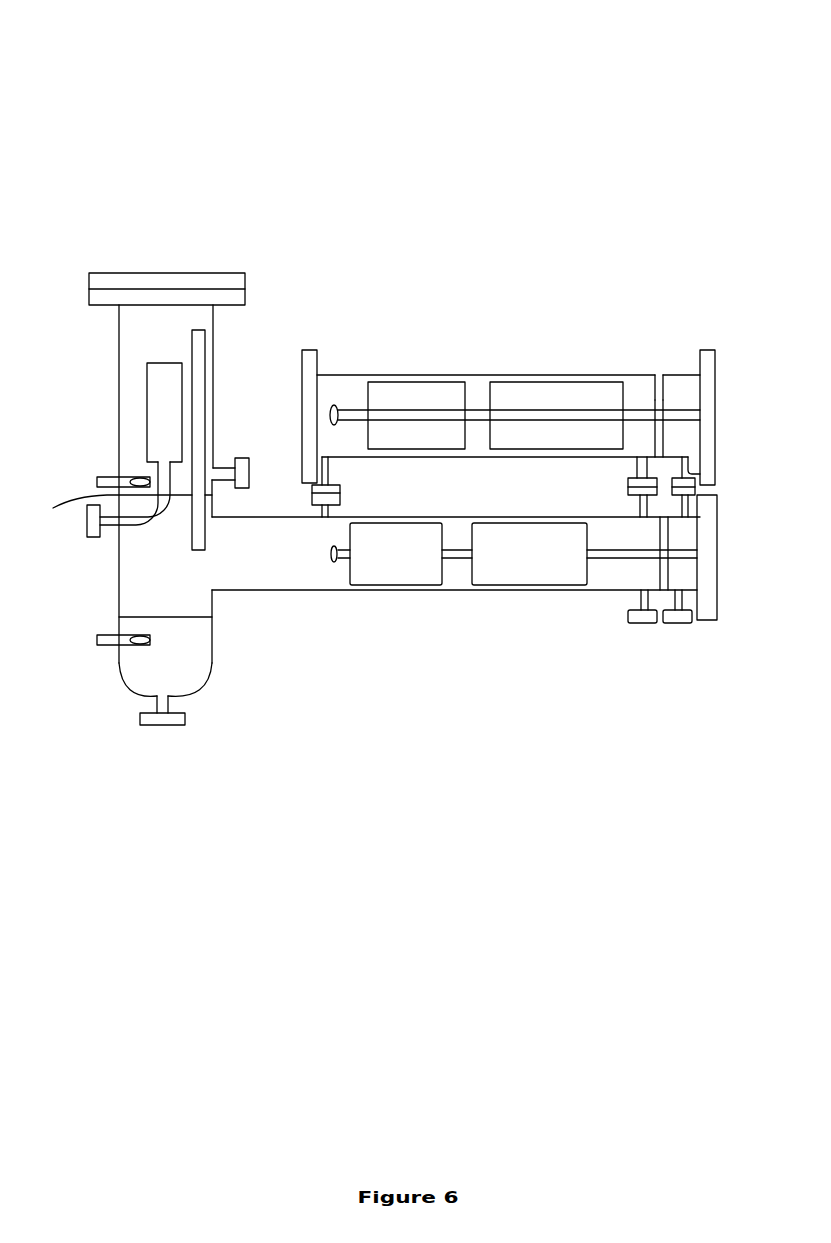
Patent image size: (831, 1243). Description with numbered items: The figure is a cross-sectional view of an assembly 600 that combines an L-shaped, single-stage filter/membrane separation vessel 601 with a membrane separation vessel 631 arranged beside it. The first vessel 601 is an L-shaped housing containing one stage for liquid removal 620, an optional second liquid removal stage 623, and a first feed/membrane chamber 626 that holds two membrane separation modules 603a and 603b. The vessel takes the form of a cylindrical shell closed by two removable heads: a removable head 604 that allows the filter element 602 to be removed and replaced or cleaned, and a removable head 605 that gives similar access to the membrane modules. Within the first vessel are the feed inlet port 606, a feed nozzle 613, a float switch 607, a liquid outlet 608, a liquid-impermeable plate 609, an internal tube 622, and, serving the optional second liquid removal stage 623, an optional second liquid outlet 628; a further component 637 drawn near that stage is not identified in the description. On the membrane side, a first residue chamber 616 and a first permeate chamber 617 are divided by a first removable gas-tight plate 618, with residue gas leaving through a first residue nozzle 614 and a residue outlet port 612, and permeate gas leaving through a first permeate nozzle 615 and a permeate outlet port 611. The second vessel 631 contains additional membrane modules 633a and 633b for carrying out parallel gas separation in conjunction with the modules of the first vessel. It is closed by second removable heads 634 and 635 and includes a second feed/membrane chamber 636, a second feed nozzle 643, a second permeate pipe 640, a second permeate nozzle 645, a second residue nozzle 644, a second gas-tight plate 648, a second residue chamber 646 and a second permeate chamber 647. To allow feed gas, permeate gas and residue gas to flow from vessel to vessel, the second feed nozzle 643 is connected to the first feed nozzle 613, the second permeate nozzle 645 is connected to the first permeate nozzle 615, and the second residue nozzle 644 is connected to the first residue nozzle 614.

The assembly 600 is at (405, 42).
The removable head 604 is at (242, 273).
The stage for liquid removal 620 is at (125, 338).
The internal tube 622 is at (198, 342).
The filter element 602 is at (158, 375).
The float switch 607 is at (98, 477).
The liquid outlet 608 is at (240, 455).
The liquid-impermeable plate 609 is at (53, 508).
The feed inlet port 606 is at (87, 535).
The first feed/membrane chamber 626 is at (228, 522).
The lower inlet pipe 637 is at (103, 647).
The optional second liquid removal stage 623 is at (188, 690).
The optional second liquid outlet 628 is at (147, 724).
The second removable head 634 is at (303, 350).
The second feed/membrane chamber 636 is at (328, 383).
The additional membrane module 633a is at (387, 392).
The additional membrane module 633b is at (545, 372).
The second permeate pipe 640 is at (458, 420).
The second residue chamber 646 is at (627, 388).
The second gas-tight plate 648 is at (658, 382).
The second permeate chamber 647 is at (667, 380).
The second removable head 635 is at (715, 375).
The membrane separation vessel 631 is at (483, 457).
The second feed nozzle 643 is at (330, 473).
The feed nozzle 613 is at (340, 502).
The second residue nozzle 644 is at (630, 478).
The first residue nozzle 614 is at (640, 502).
The first permeate nozzle 615 is at (696, 490).
The second permeate nozzle 645 is at (701, 474).
The membrane separation module 603a is at (373, 532).
The membrane separation module 603b is at (508, 537).
The first residue chamber 616 is at (613, 580).
The first removable gas-tight plate 618 is at (660, 540).
The first permeate chamber 617 is at (688, 573).
The L-shaped single-stage filter/membrane separation vessel 601 is at (455, 595).
The removable head 605 is at (717, 620).
The residue outlet port 612 is at (635, 627).
The permeate outlet port 611 is at (672, 627).